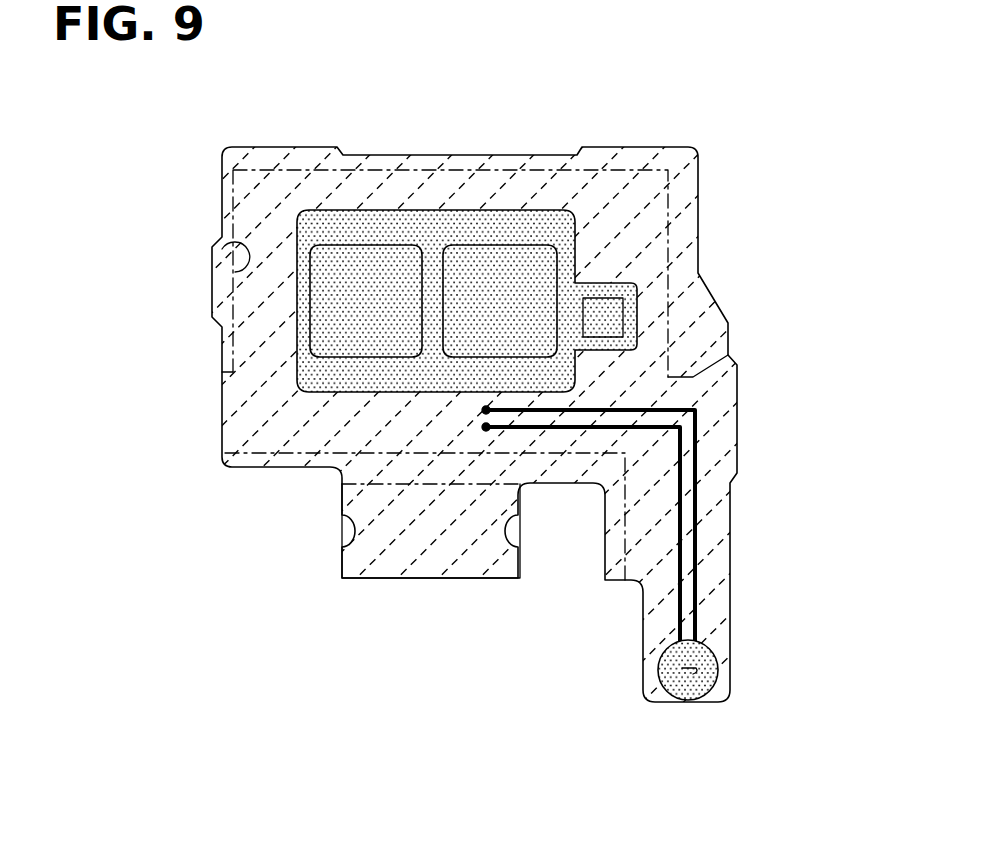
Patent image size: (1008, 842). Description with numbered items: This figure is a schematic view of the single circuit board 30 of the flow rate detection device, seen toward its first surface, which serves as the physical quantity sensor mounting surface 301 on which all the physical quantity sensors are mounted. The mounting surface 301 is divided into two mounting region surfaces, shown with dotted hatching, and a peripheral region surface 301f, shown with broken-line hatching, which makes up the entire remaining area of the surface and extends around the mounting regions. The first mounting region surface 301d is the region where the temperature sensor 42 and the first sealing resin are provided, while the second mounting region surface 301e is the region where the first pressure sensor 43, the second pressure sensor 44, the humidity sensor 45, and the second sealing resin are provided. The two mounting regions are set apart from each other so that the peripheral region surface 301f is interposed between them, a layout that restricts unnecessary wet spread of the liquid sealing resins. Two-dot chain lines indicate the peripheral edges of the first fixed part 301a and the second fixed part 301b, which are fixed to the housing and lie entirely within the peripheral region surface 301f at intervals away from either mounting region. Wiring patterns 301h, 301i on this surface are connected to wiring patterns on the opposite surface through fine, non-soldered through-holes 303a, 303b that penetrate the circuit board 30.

The circuit board 30 is at (698, 184).
The physical quantity sensor mounting surface 301 is at (708, 398).
The first fixed part 301a is at (210, 253).
The second fixed part 301b is at (417, 487).
The first mounting region surface 301d is at (696, 672).
The second mounting region surface 301e is at (343, 225).
The peripheral region surface 301f is at (257, 413).
The wiring pattern 301h is at (683, 560).
The wiring pattern 301i is at (700, 505).
The through-hole 303a is at (455, 487).
The through-hole 303b is at (484, 410).
The temperature sensor 42 is at (700, 668).
The first pressure sensor 43 is at (542, 247).
The second pressure sensor 44 is at (412, 245).
The humidity sensor 45 is at (623, 307).